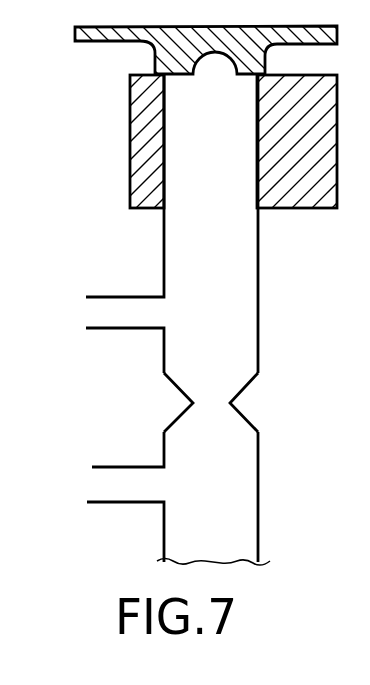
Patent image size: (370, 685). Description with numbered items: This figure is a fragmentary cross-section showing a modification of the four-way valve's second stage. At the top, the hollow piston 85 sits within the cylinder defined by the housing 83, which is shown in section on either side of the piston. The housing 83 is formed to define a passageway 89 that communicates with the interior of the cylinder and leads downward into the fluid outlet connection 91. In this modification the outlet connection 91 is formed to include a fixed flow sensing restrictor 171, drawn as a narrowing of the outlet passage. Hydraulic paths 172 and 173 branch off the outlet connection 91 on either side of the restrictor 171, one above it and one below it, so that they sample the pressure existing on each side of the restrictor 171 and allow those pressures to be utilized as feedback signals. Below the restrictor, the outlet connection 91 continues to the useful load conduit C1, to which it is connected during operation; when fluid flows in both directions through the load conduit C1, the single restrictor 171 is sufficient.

The hollow piston 85 is at (75, 34).
The housing 83 is at (132, 131).
The passageway 89 is at (216, 158).
The fluid outlet connection 91 is at (168, 254).
The hydraulic path 172 is at (135, 330).
The fixed flow sensing restrictor 171 is at (176, 389).
The hydraulic path 173 is at (130, 465).
The load conduit C1 is at (167, 538).